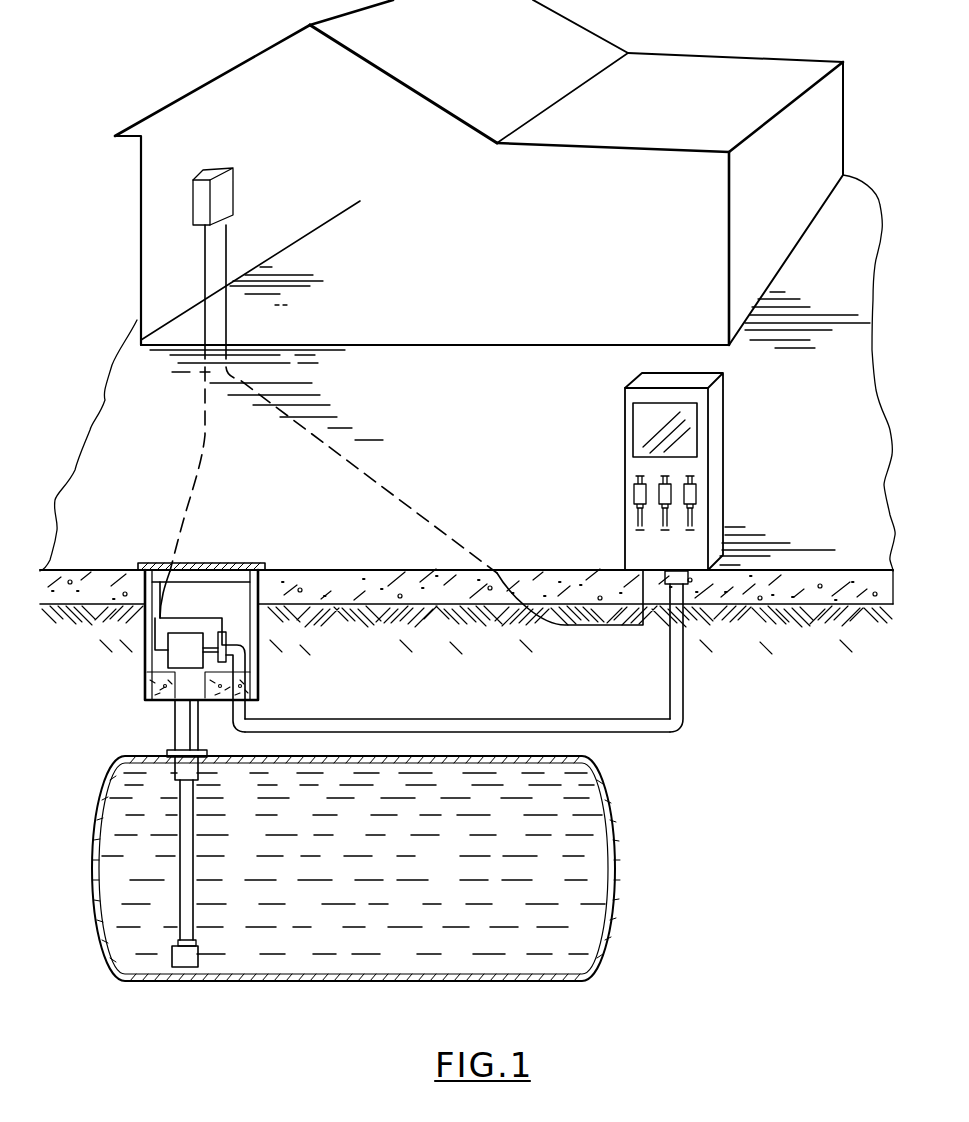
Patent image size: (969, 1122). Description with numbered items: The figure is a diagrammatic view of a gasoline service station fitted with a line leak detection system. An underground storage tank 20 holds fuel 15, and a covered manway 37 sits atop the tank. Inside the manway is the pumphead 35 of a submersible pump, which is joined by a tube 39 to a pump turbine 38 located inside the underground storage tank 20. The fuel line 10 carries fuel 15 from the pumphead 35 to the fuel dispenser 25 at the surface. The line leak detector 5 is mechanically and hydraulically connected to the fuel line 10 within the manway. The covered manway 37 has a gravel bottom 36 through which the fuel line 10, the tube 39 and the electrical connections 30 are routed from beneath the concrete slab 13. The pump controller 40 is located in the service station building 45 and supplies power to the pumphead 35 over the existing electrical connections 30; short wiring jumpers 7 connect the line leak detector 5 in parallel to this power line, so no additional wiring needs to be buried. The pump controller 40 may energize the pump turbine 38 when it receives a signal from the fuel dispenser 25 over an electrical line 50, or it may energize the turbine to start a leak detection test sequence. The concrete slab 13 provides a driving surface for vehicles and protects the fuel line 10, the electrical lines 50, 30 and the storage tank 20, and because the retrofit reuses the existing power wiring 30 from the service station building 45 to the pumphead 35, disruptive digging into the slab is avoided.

The line leak detector 5 is at (242, 644).
The short wiring jumpers 7 is at (200, 612).
The fuel line 10 is at (516, 720).
The concrete slab 13 is at (830, 607).
The fuel 15 is at (448, 863).
The underground storage tank 20 is at (617, 845).
The fuel dispenser 25 is at (724, 437).
The electrical connections 30 is at (192, 484).
The pumphead 35 is at (175, 655).
The gravel bottom 36 is at (140, 700).
The covered manway 37 is at (140, 622).
The pump turbine 38 is at (186, 956).
The tube 39 is at (190, 833).
The pump controller 40 is at (229, 197).
The service station building 45 is at (792, 50).
The electrical line 50 is at (383, 485).